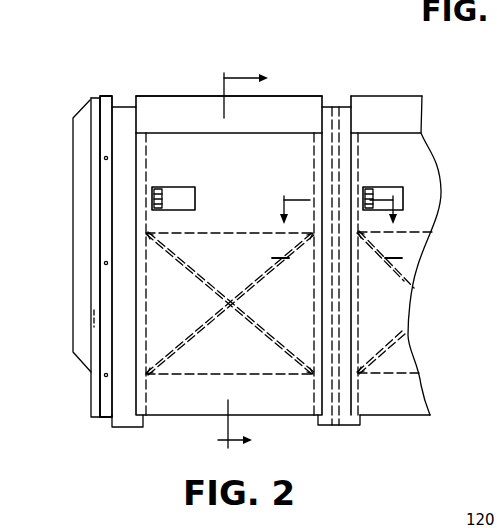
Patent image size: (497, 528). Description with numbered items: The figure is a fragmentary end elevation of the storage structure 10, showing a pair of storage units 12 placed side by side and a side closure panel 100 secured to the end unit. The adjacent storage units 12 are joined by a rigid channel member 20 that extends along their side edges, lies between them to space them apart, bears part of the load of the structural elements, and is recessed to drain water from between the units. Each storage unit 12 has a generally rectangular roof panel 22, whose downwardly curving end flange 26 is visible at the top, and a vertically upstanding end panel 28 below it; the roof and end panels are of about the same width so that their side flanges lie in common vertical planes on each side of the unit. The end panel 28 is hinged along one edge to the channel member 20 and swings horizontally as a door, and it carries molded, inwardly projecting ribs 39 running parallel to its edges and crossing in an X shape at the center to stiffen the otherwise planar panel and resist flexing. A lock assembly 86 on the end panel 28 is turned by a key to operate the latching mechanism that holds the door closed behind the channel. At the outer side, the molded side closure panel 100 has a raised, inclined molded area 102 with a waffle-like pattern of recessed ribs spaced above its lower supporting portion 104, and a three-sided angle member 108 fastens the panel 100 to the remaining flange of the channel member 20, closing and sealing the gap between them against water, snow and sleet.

The storage structure 10 is at (311, 48).
The storage unit 12 is at (174, 96).
The channel member 20 is at (336, 105).
The roof panel 22 is at (312, 95).
The end flange 26 is at (201, 124).
The end panel 28 is at (242, 268).
The rib 39 is at (152, 325).
The lock assembly 86 is at (166, 187).
The side closure panel 100 is at (82, 113).
The raised inclined molded area 102 is at (87, 252).
The lower supporting portion 104 is at (100, 395).
The angle member 108 is at (110, 97).